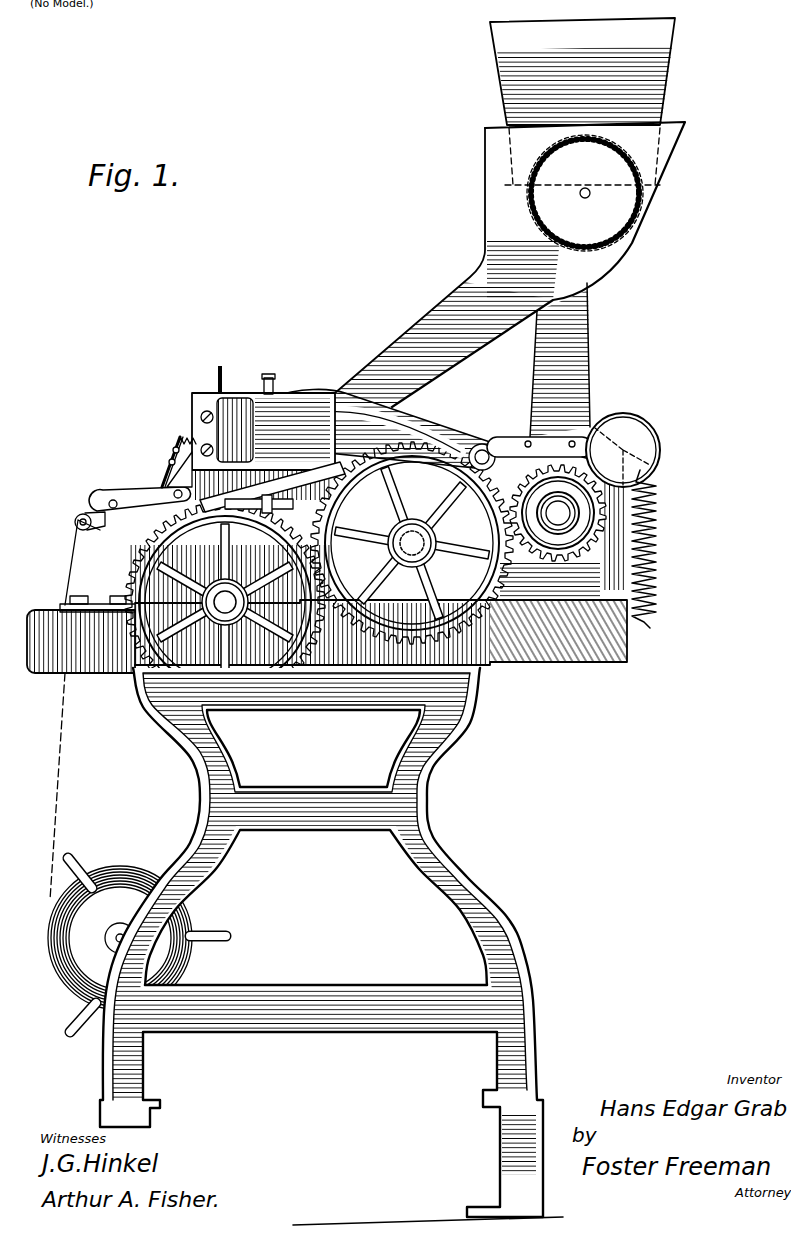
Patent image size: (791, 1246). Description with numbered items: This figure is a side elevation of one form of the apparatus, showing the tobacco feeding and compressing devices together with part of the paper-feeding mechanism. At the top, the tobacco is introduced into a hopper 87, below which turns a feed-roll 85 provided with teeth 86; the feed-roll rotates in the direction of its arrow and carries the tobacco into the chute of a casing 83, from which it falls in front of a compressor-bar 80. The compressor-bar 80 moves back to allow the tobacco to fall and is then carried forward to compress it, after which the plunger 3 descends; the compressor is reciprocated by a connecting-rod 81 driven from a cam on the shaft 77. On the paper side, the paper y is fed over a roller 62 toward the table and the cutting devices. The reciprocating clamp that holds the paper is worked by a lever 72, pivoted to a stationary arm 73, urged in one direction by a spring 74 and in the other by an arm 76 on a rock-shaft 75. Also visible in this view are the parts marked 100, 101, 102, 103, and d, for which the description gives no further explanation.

The hopper 87 is at (667, 68).
The casing 83 is at (670, 181).
The teeth 86 is at (530, 212).
The feed-roll 85 is at (634, 237).
The lever arm 100 is at (421, 429).
The spring 74 is at (193, 420).
The plunger 3 is at (223, 381).
The lever 72 is at (176, 443).
The stationary arm 73 is at (168, 463).
The arm 76 is at (164, 486).
The rock-shaft 75 is at (174, 495).
The roller 62 is at (76, 522).
The compressor-bar 80 is at (283, 498).
The connecting-rod 81 is at (286, 511).
The shaft 77 is at (558, 513).
The bracket arm 101 is at (603, 538).
The cam wheel 102 is at (598, 468).
The coil spring 103 is at (648, 557).
The paper y is at (57, 758).
The main gear d is at (225, 602).